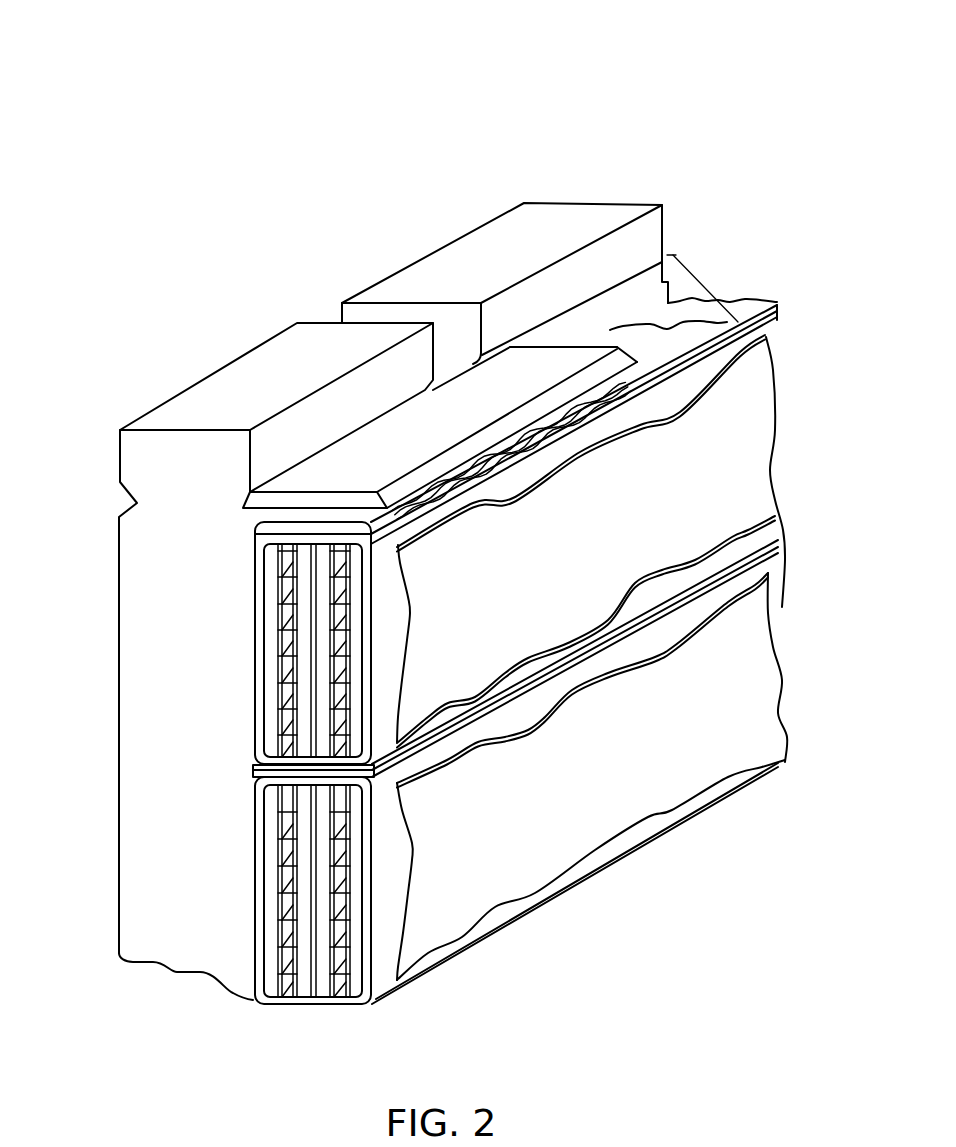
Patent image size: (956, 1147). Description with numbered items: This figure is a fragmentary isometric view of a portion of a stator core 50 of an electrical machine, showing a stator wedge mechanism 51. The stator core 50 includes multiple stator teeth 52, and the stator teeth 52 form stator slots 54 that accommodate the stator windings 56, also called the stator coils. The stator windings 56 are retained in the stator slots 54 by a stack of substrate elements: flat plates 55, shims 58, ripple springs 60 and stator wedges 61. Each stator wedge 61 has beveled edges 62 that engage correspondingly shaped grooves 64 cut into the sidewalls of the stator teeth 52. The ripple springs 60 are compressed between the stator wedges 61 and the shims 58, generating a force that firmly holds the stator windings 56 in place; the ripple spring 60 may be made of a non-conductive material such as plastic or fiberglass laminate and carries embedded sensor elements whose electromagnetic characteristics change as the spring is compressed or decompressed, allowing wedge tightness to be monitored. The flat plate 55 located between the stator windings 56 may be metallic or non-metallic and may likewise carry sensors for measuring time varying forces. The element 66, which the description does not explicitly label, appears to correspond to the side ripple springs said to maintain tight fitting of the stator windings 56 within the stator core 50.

The stator core 50 is at (710, 58).
The stator wedge mechanism 51 is at (709, 291).
The stator teeth 52 is at (135, 668).
The stator slots 54 is at (282, 720).
The flat plate 55 is at (365, 775).
The stator windings 56 is at (305, 673).
The shims 58 is at (365, 537).
The ripple springs 60 is at (613, 390).
The stator wedges 61 is at (393, 448).
The beveled edges 62 is at (503, 428).
The grooves 64 is at (243, 508).
The side sheets 66 is at (407, 657).